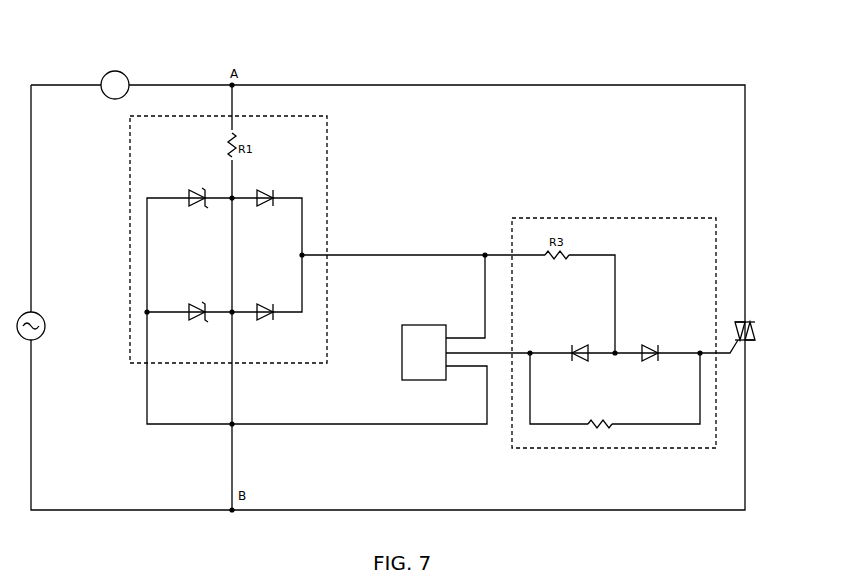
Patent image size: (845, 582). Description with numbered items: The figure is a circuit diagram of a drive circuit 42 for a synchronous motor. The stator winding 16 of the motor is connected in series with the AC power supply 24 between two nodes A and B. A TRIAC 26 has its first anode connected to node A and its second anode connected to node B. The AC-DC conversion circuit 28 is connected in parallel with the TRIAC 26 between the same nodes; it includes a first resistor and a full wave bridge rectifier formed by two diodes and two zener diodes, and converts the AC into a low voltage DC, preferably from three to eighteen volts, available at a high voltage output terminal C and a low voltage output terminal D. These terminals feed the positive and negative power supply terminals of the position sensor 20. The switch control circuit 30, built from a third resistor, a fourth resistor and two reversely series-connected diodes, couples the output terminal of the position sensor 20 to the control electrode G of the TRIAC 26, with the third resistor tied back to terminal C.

The stator winding 16 is at (113, 99).
The AC power supply 24 is at (40, 313).
The AC-DC conversion circuit 28 is at (327, 182).
The position sensor 20 is at (417, 325).
The switch control circuit 30 is at (597, 218).
The TRIAC 26 is at (765, 328).
The drive circuit 42 is at (652, 80).